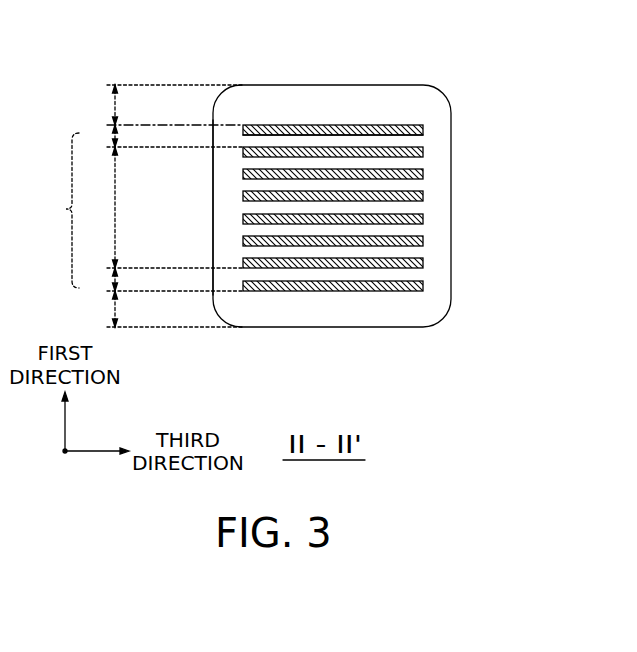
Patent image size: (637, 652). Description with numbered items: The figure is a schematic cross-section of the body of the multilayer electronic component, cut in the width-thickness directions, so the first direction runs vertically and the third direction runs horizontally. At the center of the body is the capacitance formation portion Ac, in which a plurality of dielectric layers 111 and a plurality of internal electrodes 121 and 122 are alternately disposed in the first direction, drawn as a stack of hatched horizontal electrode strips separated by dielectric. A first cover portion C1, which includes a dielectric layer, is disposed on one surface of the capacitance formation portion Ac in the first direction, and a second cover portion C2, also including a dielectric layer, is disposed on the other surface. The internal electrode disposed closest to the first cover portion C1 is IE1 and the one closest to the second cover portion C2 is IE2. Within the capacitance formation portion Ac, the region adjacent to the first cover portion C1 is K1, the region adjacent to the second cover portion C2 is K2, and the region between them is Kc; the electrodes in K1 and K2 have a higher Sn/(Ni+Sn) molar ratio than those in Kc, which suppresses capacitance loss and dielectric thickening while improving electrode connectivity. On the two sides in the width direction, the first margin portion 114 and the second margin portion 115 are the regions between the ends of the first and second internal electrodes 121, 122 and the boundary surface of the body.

The dielectric layer 111 is at (419, 138).
The first margin portion 114 is at (213, 234).
The second margin portion 115 is at (446, 236).
The first internal electrode 121 is at (423, 173).
The second internal electrode 122 is at (423, 151).
The internal electrode closest to the first cover portion IE1 is at (423, 127).
The internal electrode closest to the second cover portion IE2 is at (423, 282).
The first cover portion C1 is at (161, 105).
The second cover portion C2 is at (161, 309).
The region of the capacitance formation portion adjacent to the first cover portion K1 is at (162, 137).
The region of the capacitance formation portion adjacent to the second cover portion K2 is at (162, 280).
The region disposed between K1 and K2 Kc is at (98, 207).
The capacitance formation portion Ac is at (57, 210).